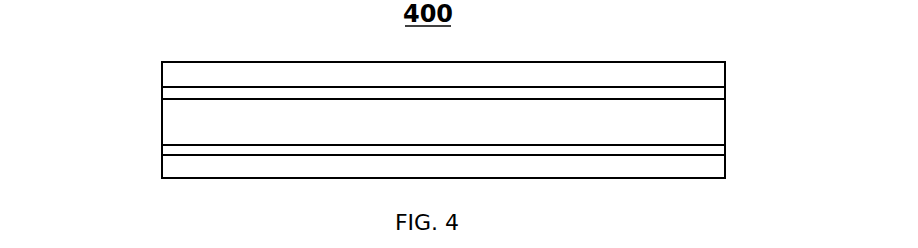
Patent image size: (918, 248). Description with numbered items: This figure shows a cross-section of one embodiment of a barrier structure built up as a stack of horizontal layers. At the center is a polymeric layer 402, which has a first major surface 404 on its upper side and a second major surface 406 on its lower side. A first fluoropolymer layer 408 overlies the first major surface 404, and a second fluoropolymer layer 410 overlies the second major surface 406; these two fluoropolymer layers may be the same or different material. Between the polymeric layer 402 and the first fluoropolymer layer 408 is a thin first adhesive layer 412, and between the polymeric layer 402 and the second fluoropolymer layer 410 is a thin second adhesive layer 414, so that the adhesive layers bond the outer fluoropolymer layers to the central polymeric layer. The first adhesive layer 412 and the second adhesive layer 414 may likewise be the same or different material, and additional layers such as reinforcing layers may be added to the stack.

The polymeric layer 402 is at (379, 122).
The first major surface 404 is at (492, 85).
The second major surface 406 is at (496, 124).
The first fluoropolymer layer 408 is at (379, 74).
The second fluoropolymer layer 410 is at (378, 166).
The first adhesive layer 412 is at (502, 70).
The second adhesive layer 414 is at (498, 146).